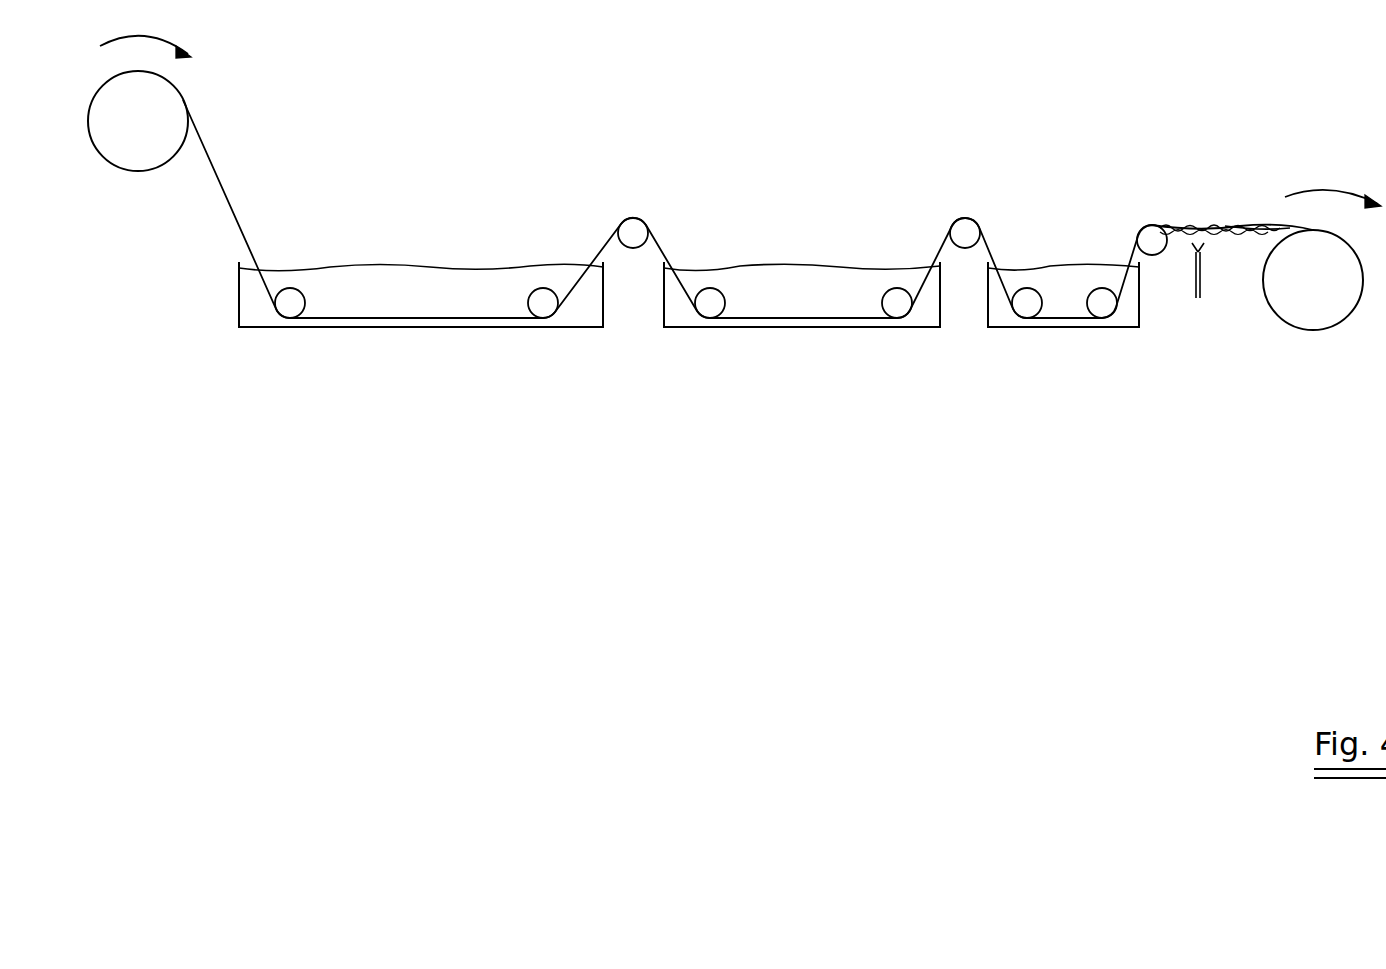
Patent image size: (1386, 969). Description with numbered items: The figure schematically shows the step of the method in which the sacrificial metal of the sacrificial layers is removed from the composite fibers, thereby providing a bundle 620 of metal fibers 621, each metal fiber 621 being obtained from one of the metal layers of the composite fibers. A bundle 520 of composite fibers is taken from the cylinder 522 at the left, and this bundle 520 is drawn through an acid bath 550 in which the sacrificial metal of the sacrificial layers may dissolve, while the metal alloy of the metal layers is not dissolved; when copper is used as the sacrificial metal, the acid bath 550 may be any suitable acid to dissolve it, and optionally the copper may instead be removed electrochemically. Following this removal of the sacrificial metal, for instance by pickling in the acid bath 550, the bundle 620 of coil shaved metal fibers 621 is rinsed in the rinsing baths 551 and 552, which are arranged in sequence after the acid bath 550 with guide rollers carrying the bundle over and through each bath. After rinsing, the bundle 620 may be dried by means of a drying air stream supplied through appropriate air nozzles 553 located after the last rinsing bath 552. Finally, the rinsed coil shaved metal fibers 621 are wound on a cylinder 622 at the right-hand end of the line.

The cylinder 522 is at (172, 128).
The bundle of composite fibers 520 is at (208, 157).
The acid bath 550 is at (456, 306).
The rinsing bath 551 is at (826, 306).
The rinsing bath 552 is at (1063, 288).
The air nozzle 553 is at (1192, 298).
The bundle of metal fibers 620 is at (1183, 205).
The metal fiber 621 is at (1222, 228).
The cylinder 622 is at (1308, 300).